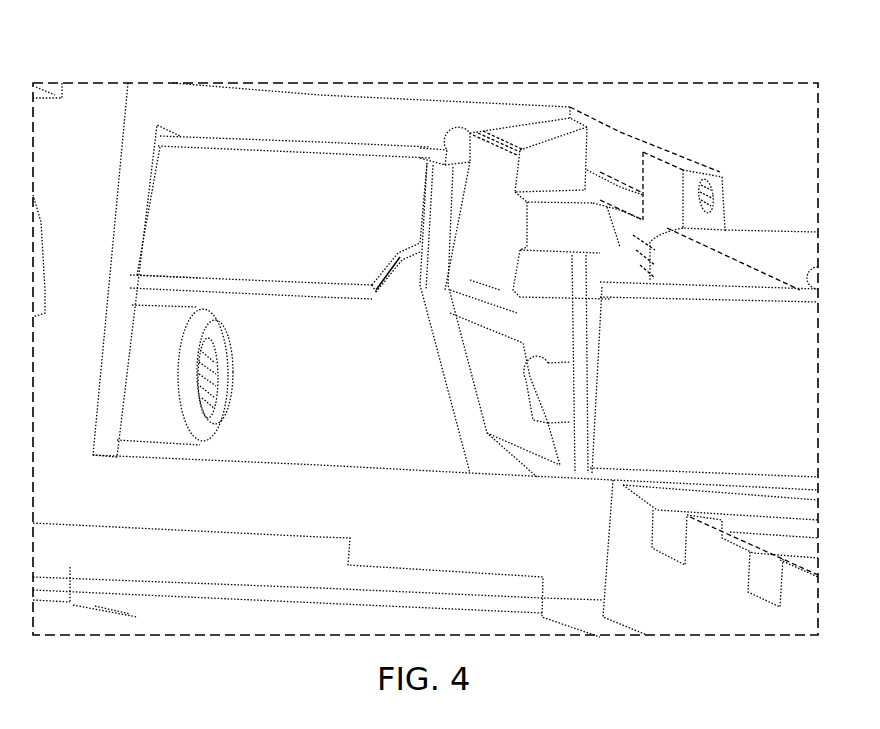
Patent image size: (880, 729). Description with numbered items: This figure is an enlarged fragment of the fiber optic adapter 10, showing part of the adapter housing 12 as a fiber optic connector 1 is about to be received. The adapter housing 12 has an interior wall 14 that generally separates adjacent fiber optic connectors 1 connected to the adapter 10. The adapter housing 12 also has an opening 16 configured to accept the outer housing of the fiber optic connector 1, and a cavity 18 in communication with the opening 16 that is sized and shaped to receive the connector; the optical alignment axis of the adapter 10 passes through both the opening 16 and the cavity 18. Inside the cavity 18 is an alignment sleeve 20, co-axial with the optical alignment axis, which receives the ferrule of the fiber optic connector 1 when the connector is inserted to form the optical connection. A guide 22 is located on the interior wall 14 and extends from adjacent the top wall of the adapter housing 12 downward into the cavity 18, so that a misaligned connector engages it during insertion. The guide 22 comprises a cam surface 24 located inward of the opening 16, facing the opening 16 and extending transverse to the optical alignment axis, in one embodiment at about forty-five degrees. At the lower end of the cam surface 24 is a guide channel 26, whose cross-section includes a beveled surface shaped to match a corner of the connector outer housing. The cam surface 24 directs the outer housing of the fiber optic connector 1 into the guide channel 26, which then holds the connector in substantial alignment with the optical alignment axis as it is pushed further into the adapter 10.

The fiber optic connector 1 is at (753, 210).
The adapter 10 is at (224, 74).
The adapter housing 12 is at (506, 113).
The interior wall 14 is at (317, 407).
The opening 16 is at (597, 270).
The cavity 18 is at (387, 399).
The alignment sleeve 20 is at (153, 368).
The guide 22 is at (317, 178).
The cam surface 24 is at (398, 252).
The guide channel 26 is at (201, 280).